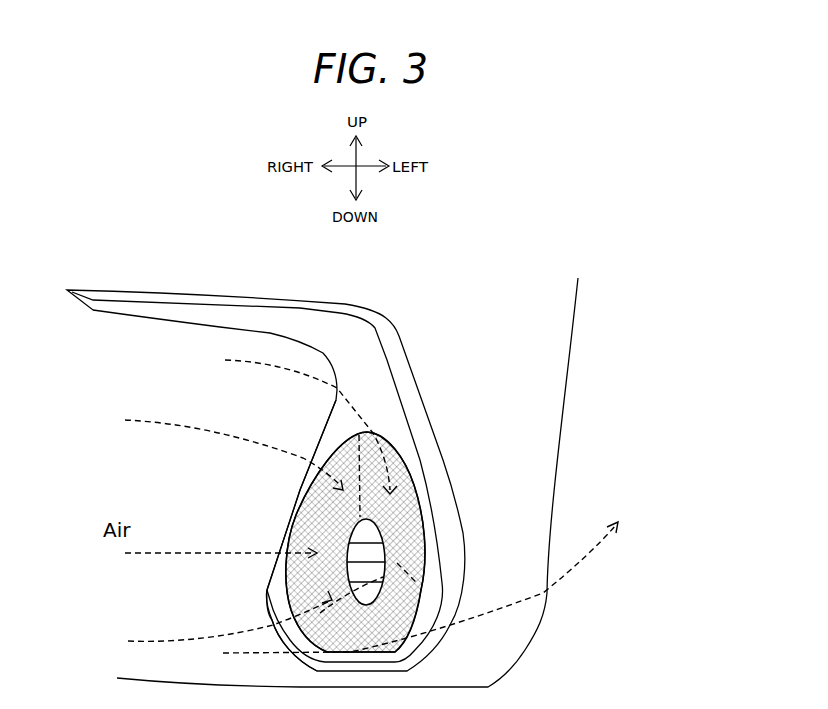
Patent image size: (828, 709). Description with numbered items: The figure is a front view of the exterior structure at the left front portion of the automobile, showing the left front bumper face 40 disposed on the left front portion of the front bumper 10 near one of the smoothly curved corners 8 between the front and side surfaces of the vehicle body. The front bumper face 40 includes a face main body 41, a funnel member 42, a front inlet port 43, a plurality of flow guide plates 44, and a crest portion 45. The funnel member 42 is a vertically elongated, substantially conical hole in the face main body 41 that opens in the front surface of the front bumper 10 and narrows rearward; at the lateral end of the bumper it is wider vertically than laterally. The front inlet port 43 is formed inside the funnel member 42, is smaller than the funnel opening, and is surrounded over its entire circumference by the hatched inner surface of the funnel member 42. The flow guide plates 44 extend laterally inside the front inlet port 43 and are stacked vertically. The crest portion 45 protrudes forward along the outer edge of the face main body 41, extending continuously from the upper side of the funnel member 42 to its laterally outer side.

The corner 8 is at (512, 628).
The front bumper 10 is at (550, 333).
The front bumper face 40 is at (352, 462).
The face main body 41 is at (345, 412).
The funnel member 42 is at (378, 503).
The front inlet port 43 is at (350, 560).
The flow guide plates 44 is at (340, 543).
The crest portion 45 is at (418, 412).